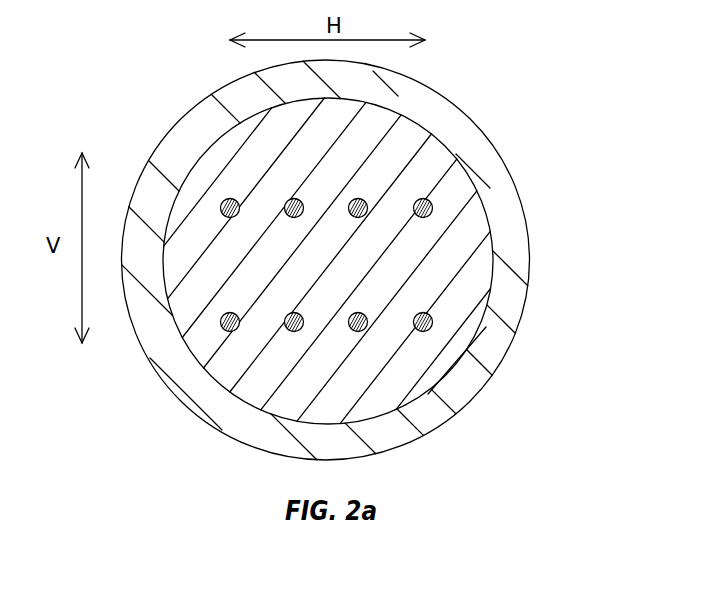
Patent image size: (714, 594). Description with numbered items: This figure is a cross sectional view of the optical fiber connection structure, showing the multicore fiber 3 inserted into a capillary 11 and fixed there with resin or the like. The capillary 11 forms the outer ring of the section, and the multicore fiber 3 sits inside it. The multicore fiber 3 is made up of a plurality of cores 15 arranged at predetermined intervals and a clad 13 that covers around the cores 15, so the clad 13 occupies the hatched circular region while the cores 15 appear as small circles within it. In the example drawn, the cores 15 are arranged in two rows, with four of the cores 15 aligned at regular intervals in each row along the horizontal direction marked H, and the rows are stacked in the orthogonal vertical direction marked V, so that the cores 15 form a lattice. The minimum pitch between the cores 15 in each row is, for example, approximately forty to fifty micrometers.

The multicore fiber 3 is at (207, 175).
The capillary 11 is at (395, 98).
The clad 13 is at (460, 327).
The cores 15 is at (432, 200).